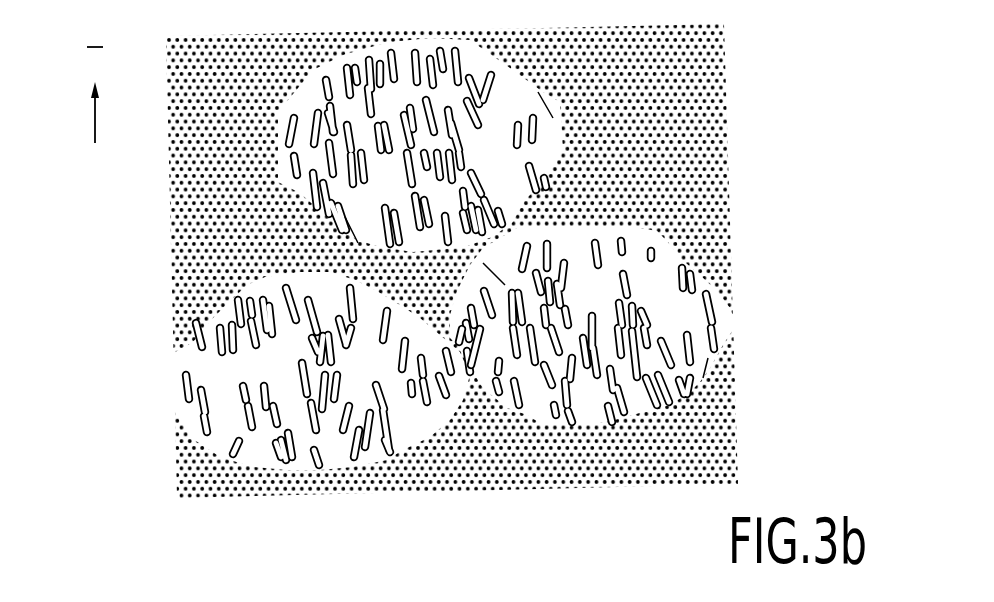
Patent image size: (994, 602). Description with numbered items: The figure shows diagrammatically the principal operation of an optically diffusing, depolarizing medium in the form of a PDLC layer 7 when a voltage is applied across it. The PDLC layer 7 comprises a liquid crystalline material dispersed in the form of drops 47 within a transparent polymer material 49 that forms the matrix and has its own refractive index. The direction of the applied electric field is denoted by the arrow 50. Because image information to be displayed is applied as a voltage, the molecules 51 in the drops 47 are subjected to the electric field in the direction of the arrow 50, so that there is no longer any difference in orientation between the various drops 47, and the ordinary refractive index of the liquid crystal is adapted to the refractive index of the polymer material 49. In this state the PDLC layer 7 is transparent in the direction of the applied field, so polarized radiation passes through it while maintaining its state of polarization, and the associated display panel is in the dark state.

The PDLC layer 7 is at (457, 249).
The drops 47 is at (452, 254).
The transparent polymer material 49 is at (705, 445).
The arrow 50 is at (93, 124).
The molecules 51 is at (330, 148).